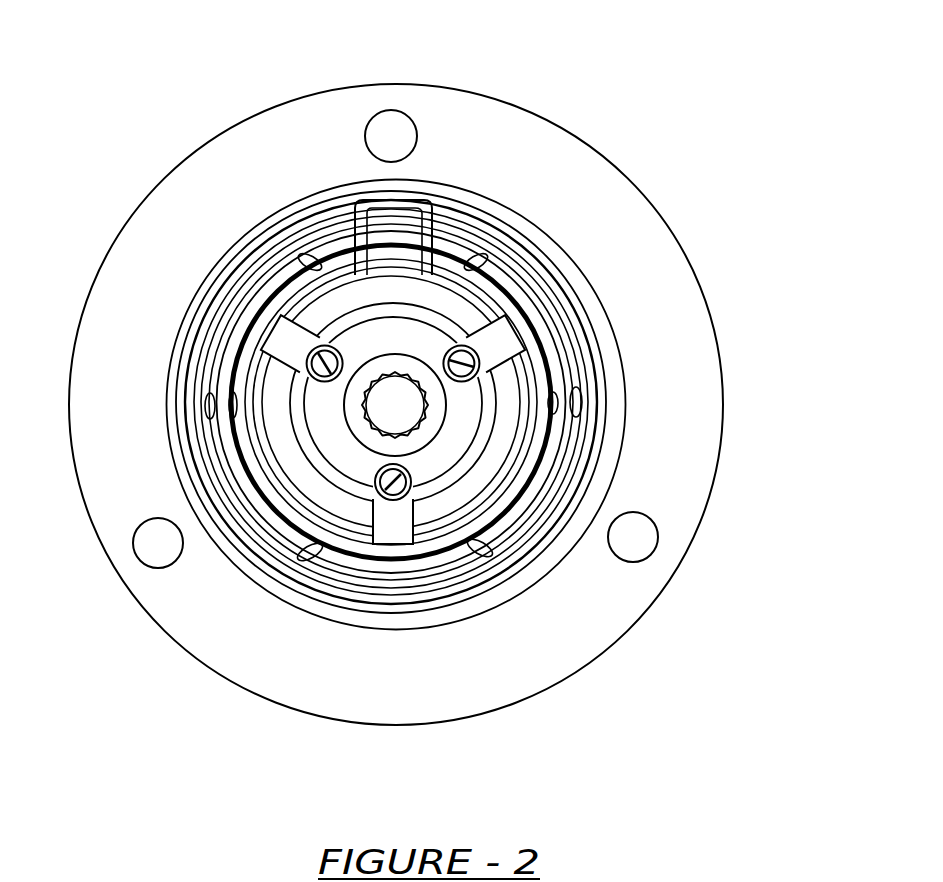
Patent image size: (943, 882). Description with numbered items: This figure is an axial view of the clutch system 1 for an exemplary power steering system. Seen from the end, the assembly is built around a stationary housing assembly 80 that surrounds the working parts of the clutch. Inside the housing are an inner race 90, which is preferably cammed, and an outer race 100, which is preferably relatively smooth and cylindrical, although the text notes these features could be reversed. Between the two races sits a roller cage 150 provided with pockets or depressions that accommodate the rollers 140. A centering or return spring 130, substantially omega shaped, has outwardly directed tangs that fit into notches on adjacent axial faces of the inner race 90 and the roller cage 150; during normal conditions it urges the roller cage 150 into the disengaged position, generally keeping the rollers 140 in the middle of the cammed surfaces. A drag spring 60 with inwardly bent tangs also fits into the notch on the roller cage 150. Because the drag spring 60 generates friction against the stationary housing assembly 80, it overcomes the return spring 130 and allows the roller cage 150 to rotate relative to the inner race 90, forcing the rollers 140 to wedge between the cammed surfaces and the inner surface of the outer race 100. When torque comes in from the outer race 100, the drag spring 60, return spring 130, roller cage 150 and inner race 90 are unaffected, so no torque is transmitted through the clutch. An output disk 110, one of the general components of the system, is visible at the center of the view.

The steering column assembly 1 is at (241, 51).
The drag spring 60 is at (282, 233).
The housing assembly 80 is at (142, 262).
The inner race 90 is at (545, 386).
The outer race 100 is at (587, 430).
The output disk 110 is at (387, 413).
The centering or return spring 130 is at (487, 297).
The roller 140 is at (487, 563).
The roller cage 150 is at (510, 532).